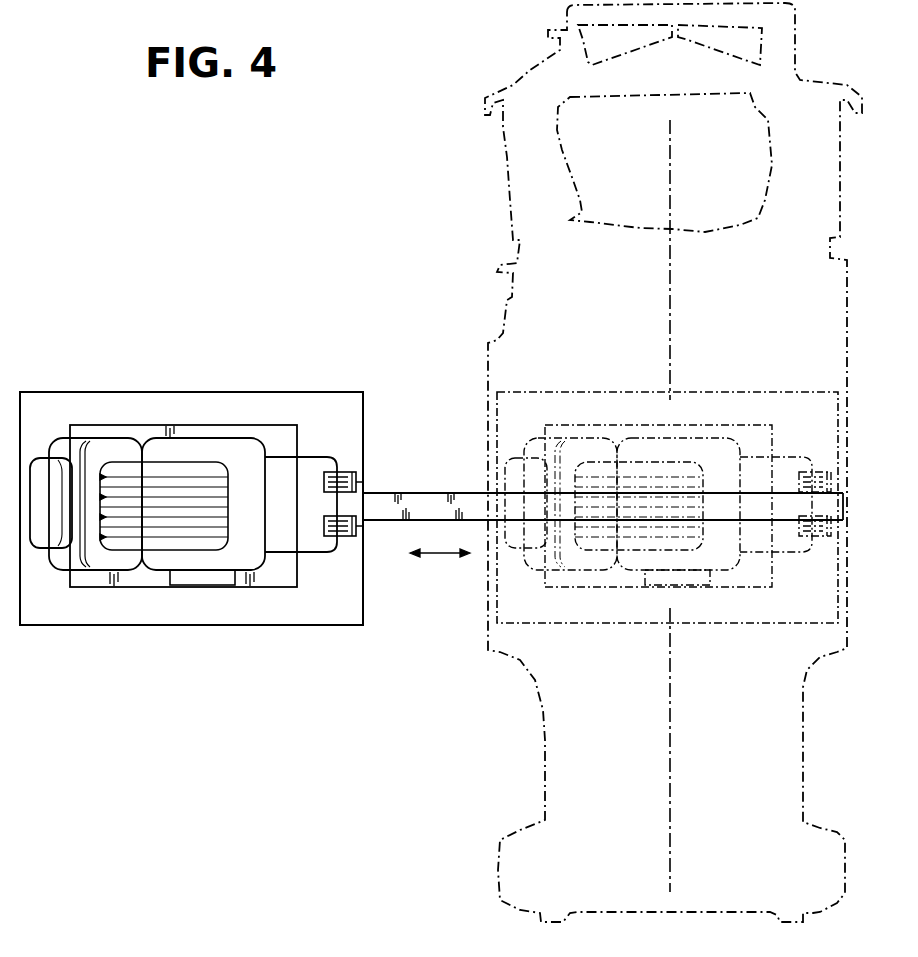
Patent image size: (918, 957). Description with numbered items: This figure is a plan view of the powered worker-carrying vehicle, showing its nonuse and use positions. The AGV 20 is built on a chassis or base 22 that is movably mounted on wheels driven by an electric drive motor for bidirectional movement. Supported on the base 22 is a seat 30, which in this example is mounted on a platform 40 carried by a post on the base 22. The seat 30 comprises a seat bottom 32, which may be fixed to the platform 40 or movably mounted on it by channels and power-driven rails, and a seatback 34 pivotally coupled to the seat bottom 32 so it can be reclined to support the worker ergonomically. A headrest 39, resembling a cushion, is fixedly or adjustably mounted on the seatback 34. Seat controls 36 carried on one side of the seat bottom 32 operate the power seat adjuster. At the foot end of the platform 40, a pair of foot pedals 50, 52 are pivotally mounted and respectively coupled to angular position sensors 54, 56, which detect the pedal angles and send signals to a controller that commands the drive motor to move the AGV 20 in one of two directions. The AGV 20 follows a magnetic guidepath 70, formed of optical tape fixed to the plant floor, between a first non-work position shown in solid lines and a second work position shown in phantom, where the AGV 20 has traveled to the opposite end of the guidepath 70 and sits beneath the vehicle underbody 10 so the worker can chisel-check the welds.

The vehicle underbody 10 is at (510, 190).
The AGV 20 is at (60, 633).
The base 22 is at (115, 602).
The seat 30 is at (118, 522).
The seat bottom 32 is at (185, 448).
The seatback 34 is at (110, 448).
The seat controls 36 is at (198, 586).
The headrest 39 is at (45, 474).
The platform 40 is at (153, 424).
The foot pedal 50 is at (358, 482).
The foot pedal 52 is at (360, 526).
The angular position sensor 54 is at (275, 433).
The angular position sensor 56 is at (298, 542).
The guidepath 70 is at (458, 493).